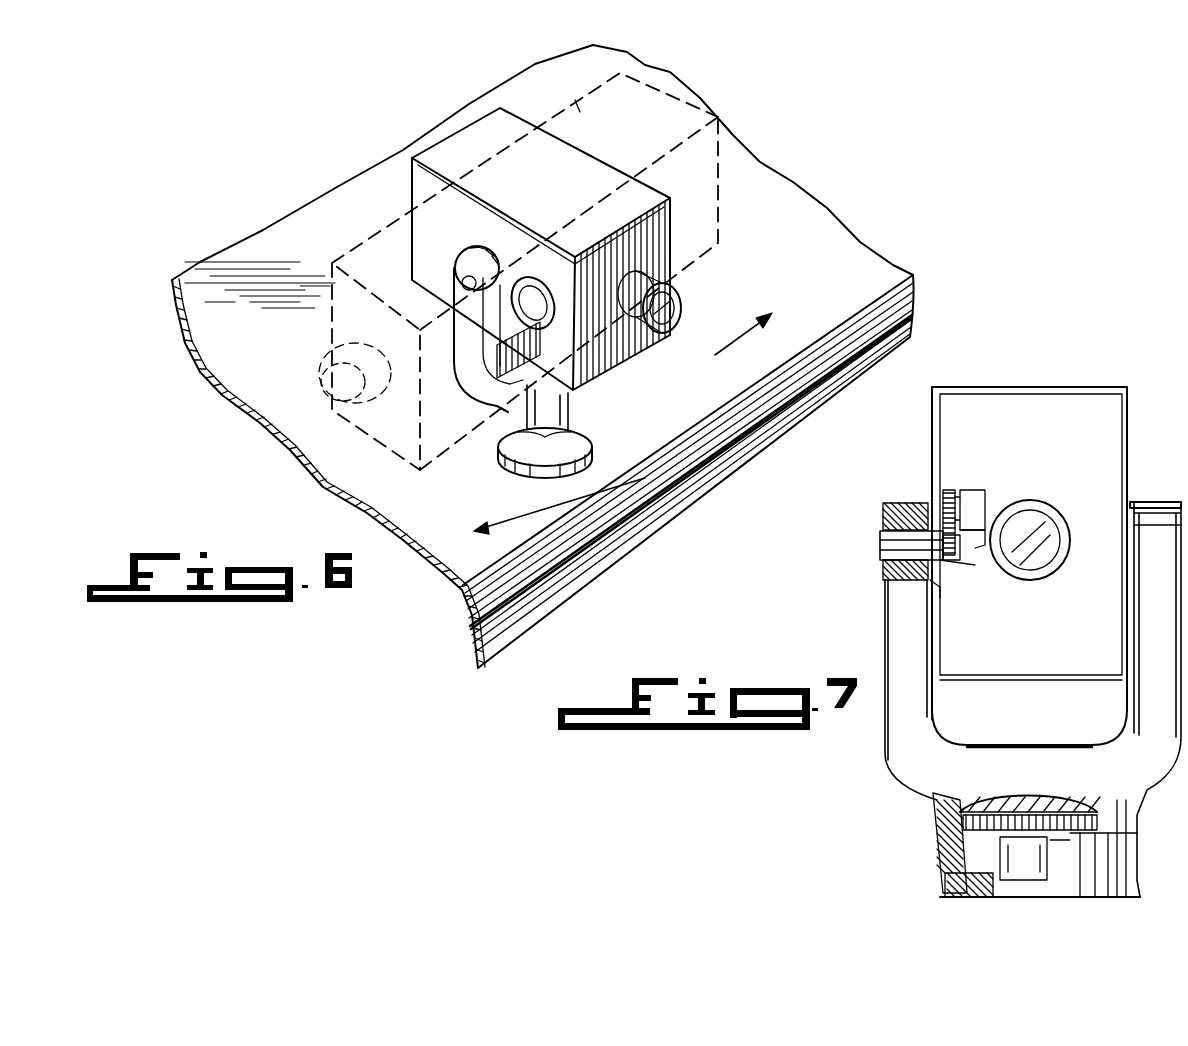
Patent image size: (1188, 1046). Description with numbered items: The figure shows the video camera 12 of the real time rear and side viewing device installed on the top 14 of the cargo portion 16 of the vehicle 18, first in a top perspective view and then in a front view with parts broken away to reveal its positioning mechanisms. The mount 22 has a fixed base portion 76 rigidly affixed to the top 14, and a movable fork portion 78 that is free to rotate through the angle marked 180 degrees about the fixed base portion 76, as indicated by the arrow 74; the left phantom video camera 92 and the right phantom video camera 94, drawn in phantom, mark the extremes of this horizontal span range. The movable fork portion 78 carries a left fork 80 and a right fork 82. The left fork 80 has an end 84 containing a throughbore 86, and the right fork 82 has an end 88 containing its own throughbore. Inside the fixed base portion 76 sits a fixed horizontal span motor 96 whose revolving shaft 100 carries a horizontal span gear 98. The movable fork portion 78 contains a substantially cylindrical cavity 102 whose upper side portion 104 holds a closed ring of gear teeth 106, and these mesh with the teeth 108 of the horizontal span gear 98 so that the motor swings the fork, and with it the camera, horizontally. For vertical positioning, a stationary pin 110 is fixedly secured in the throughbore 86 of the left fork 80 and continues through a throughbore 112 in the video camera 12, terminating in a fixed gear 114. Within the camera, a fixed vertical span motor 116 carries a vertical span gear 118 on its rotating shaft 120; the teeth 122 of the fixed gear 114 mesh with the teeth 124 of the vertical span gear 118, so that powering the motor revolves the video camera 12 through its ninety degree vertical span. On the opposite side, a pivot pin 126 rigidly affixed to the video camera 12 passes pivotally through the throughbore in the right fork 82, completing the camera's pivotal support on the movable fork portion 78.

In FIG. 6, the video camera 12 is at (653, 249).
In FIG. 7, the video camera 12 is at (1043, 398).
In FIG. 6, the top 14 is at (262, 245).
In FIG. 6, the cargo portion 16 is at (488, 655).
In FIG. 6, the vehicle 18 is at (727, 150).
In FIG. 6, the mount 22 is at (528, 423).
In FIG. 7, the mount 22 is at (928, 798).
In FIG. 6, the arrow 74 is at (717, 350).
In FIG. 6, the fixed base portion 76 is at (513, 447).
In FIG. 7, the fixed base portion 76 is at (950, 893).
In FIG. 6, the movable fork portion 78 is at (566, 397).
In FIG. 7, the movable fork portion 78 is at (1045, 757).
In FIG. 6, the left fork 80 is at (470, 322).
In FIG. 7, the left fork 80 is at (897, 620).
In FIG. 7, the right fork 82 is at (1104, 717).
In FIG. 6, the end 84 is at (472, 258).
In FIG. 7, the end 84 is at (905, 516).
In FIG. 6, the throughbore 86 is at (466, 276).
In FIG. 7, the throughbore 86 is at (880, 545).
In FIG. 7, the end 88 is at (1145, 500).
In FIG. 6, the left phantom video camera 92 is at (332, 302).
In FIG. 6, the right phantom video camera 94 is at (575, 100).
In FIG. 7, the fixed horizontal span motor 96 is at (1110, 862).
In FIG. 7, the horizontal span gear 98 is at (1097, 827).
In FIG. 7, the revolving shaft 100 is at (1003, 843).
In FIG. 7, the cavity 102 is at (985, 870).
In FIG. 7, the upper side portion 104 is at (945, 822).
In FIG. 7, the closed ring of gear teeth 106 is at (965, 810).
In FIG. 7, the teeth 108 is at (1070, 818).
In FIG. 7, the stationary pin 110 is at (905, 553).
In FIG. 7, the throughbore 112 is at (937, 584).
In FIG. 7, the fixed gear 114 is at (960, 555).
In FIG. 7, the fixed vertical span motor 116 is at (972, 500).
In FIG. 7, the vertical span gear 118 is at (950, 490).
In FIG. 7, the rotating shaft 120 is at (957, 510).
In FIG. 7, the teeth 122 is at (937, 527).
In FIG. 7, the teeth 124 is at (972, 520).
In FIG. 7, the pivot pin 126 is at (1127, 534).
In FIG. 6, the rotation angle 180 is at (679, 371).